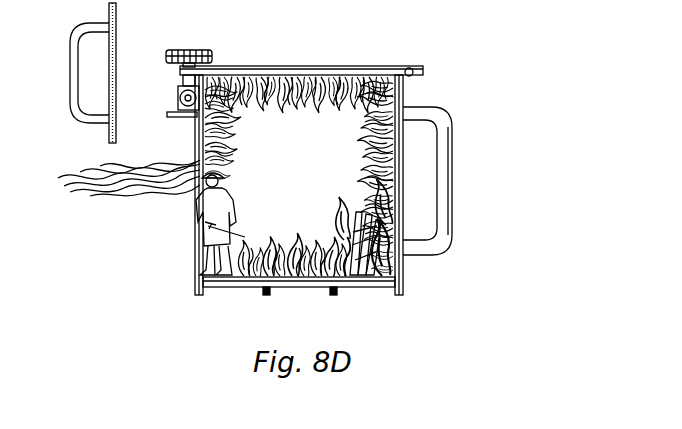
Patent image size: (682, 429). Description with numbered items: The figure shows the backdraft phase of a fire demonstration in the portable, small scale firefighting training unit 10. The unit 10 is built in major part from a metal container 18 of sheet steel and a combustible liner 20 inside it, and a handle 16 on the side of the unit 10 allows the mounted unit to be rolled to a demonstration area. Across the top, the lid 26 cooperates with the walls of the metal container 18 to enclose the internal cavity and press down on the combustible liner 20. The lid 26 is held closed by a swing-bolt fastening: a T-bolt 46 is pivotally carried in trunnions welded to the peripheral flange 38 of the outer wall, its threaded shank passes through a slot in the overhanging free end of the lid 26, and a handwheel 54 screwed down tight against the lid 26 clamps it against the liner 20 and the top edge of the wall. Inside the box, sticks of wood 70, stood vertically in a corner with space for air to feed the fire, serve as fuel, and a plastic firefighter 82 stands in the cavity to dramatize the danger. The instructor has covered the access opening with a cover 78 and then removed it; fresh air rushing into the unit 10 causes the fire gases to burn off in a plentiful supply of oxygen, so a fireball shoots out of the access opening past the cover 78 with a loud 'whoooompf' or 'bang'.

The firefighting training unit 10 is at (448, 97).
The handle 16 is at (452, 182).
The metal container 18 is at (404, 278).
The combustible liner 20 is at (375, 175).
The lid 26 is at (305, 66).
The peripheral flange 38 is at (170, 118).
The T-bolt 46 is at (168, 91).
The handwheel 54 is at (196, 50).
The sticks of wood 70 is at (355, 210).
The cover 78 is at (108, 134).
The plastic firefighter 82 is at (190, 215).